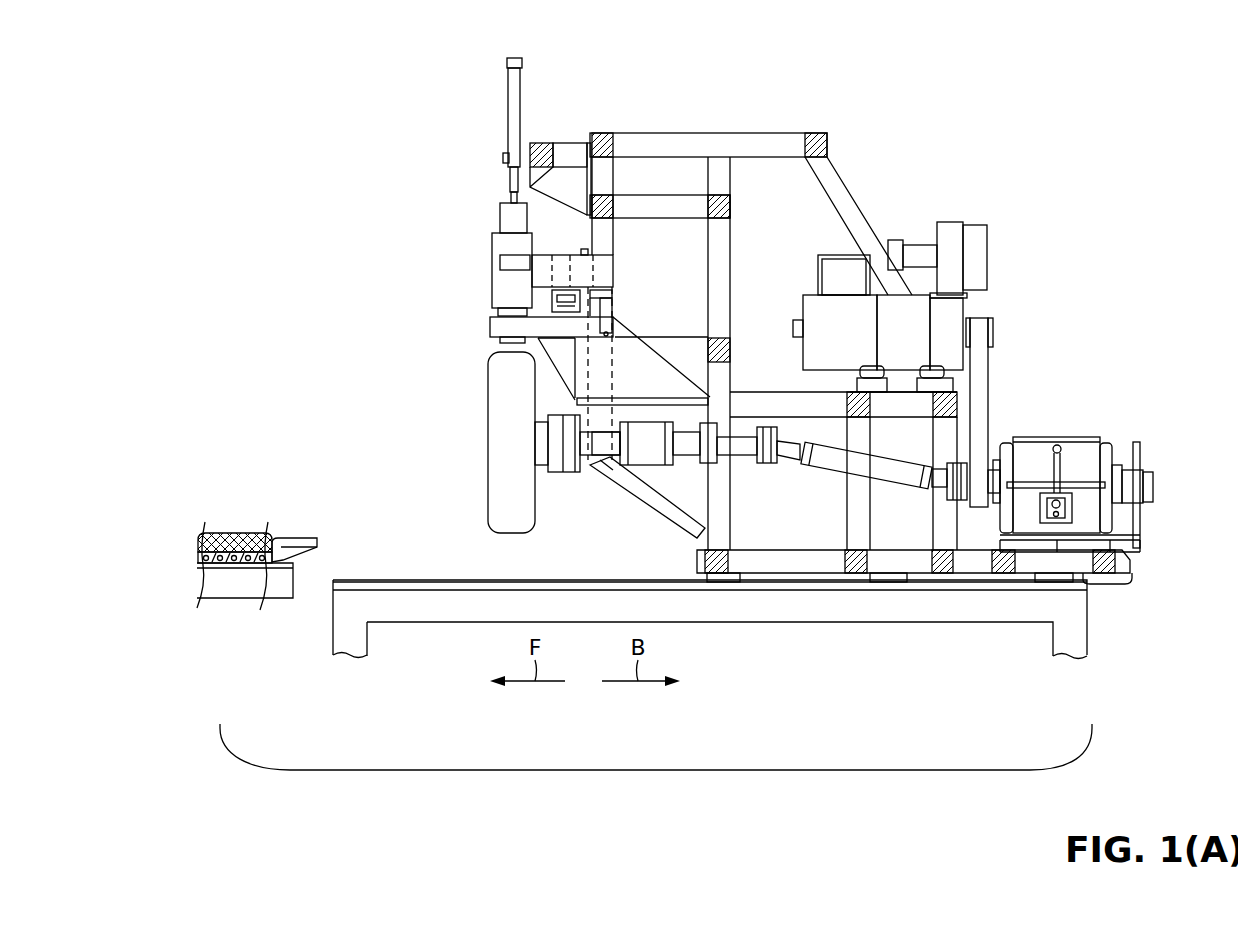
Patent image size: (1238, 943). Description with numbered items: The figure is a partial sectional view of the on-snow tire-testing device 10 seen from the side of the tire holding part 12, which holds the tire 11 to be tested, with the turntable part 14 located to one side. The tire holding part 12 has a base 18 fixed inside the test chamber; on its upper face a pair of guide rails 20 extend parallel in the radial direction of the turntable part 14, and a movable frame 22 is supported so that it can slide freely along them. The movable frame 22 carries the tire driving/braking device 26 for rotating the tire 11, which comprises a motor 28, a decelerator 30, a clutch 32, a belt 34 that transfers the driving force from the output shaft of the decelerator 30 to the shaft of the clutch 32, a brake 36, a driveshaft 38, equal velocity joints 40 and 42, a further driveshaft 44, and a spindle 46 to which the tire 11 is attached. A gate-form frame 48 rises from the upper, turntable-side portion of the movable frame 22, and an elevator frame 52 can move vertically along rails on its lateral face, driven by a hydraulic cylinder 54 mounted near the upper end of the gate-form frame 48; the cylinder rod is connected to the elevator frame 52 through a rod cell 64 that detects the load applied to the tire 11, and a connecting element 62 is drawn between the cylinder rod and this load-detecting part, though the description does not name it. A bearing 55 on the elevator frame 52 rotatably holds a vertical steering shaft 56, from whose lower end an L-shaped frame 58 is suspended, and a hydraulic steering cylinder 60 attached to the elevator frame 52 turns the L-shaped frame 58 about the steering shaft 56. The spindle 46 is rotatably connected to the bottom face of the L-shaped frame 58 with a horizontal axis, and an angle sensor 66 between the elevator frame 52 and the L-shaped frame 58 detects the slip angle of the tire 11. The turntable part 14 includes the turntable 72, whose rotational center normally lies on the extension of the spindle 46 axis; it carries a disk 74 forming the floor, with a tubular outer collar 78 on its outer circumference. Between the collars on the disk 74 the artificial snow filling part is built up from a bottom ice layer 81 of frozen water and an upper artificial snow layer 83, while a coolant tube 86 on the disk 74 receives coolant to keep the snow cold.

The on-snow tire-testing device 10 is at (919, 56).
The tire 11 is at (487, 388).
The tire holding part 12 is at (722, 110).
The turntable part 14 is at (242, 500).
The base 18 is at (1087, 638).
The guide rails 20 is at (662, 580).
The movable frame 22 is at (790, 134).
The tire driving/braking device 26 is at (1077, 430).
The motor 28 is at (945, 223).
The decelerator 30 is at (803, 310).
The clutch 32 is at (1037, 437).
The belt 34 is at (990, 373).
The brake 36 is at (1138, 470).
The driveshaft 38 is at (893, 490).
The equal velocity joint 40 is at (950, 468).
The equal velocity joint 42 is at (770, 464).
The driveshaft 44 is at (655, 470).
The spindle 46 is at (535, 468).
The gate-form frame 48 is at (610, 478).
The elevator frame 52 is at (606, 270).
The hydraulic cylinder 54 is at (523, 95).
The bearing 55 is at (493, 259).
The steering shaft 56 is at (499, 341).
The L-shaped frame 58 is at (493, 326).
The hydraulic steering cylinder 60 is at (550, 297).
The rod end 62 is at (510, 196).
The rod cell 64 is at (500, 219).
The angle sensor 66 is at (614, 300).
The turntable 72 is at (326, 542).
The disk 74 is at (207, 533).
The outer collar 78 is at (291, 538).
The ice layer 81 is at (197, 556).
The artificial snow layer 83 is at (200, 545).
The coolant tube 86 is at (266, 570).